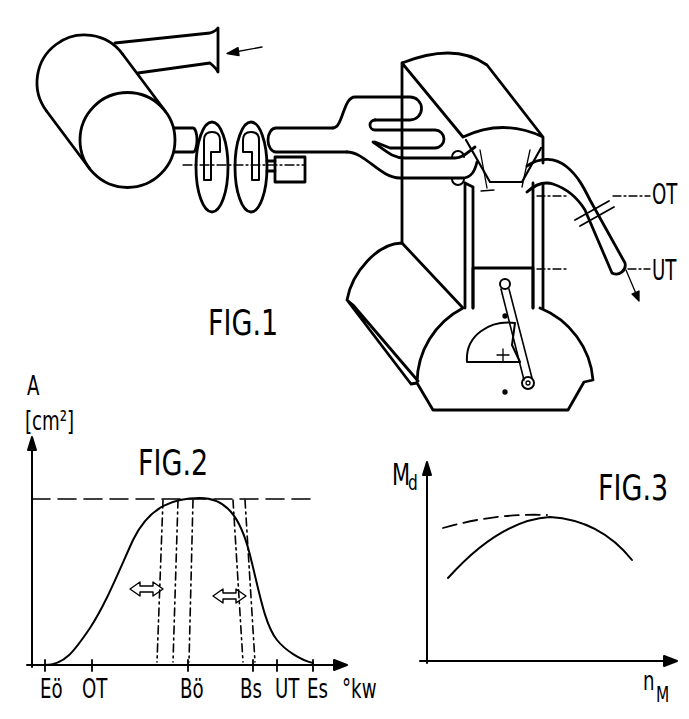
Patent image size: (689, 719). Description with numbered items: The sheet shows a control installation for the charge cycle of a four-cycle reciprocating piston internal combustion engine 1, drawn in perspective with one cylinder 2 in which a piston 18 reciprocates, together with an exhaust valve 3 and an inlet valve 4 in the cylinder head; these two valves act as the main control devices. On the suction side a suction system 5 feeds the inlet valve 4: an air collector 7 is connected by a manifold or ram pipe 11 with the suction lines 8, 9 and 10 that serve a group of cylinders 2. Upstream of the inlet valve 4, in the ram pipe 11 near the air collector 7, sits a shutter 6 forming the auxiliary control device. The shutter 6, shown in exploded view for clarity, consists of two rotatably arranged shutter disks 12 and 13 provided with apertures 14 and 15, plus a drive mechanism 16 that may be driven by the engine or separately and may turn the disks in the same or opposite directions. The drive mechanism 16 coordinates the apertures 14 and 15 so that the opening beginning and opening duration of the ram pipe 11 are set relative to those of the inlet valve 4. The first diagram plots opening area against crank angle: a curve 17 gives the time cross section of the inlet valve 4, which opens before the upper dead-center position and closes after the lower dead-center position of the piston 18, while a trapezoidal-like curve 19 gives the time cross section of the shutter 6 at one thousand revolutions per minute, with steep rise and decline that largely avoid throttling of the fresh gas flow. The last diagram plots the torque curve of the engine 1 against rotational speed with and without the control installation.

In FIG. 1, the internal combustion engine 1 is at (488, 64).
In FIG. 1, the cylinder 2 is at (473, 228).
In FIG. 1, the exhaust valve 3 is at (543, 142).
In FIG. 1, the inlet valve 4 is at (480, 150).
In FIG. 1, the suction system 5 is at (152, 24).
In FIG. 1, the shutter 6 is at (172, 223).
In FIG. 1, the air collector 7 is at (88, 172).
In FIG. 1, the suction line 8 is at (372, 97).
In FIG. 1, the suction line 9 is at (420, 128).
In FIG. 1, the suction line 10 is at (366, 168).
In FIG. 1, the manifold or ram pipe 11 is at (292, 128).
In FIG. 1, the shutter disk 12 is at (251, 212).
In FIG. 1, the shutter disk 13 is at (212, 212).
In FIG. 1, the aperture 14 is at (251, 124).
In FIG. 1, the aperture 15 is at (212, 124).
In FIG. 1, the drive mechanism 16 is at (296, 183).
In FIG. 2, the curve 17 is at (115, 582).
In FIG. 1, the piston 18 is at (490, 266).
In FIG. 2, the trapezoidal-like curve 19 is at (247, 603).